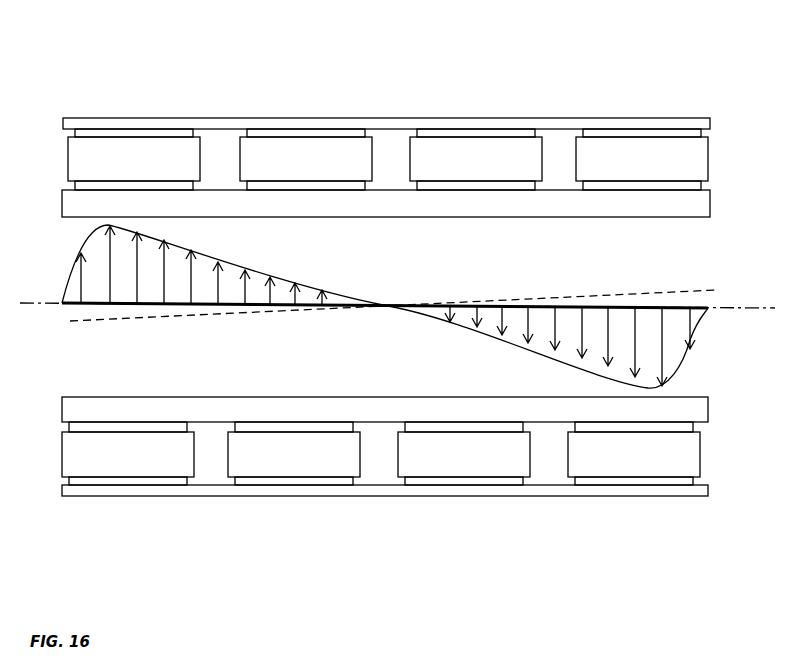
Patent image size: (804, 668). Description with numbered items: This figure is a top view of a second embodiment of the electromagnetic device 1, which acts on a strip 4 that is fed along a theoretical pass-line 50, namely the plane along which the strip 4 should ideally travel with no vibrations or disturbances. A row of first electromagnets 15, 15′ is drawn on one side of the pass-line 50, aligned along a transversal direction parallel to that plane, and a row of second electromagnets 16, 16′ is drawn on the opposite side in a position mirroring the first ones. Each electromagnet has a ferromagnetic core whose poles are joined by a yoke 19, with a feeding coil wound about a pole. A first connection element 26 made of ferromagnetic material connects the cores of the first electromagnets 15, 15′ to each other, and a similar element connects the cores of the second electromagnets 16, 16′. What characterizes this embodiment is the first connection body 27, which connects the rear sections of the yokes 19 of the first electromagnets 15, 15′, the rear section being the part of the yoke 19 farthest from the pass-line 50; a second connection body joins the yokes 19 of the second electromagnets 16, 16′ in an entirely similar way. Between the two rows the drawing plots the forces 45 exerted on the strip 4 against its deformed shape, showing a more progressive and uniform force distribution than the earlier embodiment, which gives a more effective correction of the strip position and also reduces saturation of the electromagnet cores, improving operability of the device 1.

The electromagnetic device 1 is at (613, 86).
The strip 4 is at (512, 302).
The first electromagnet 15 is at (645, 170).
The first electromagnet 15′ is at (474, 155).
The second electromagnet 16 is at (676, 455).
The second electromagnet 16′ is at (446, 465).
The yoke 19 is at (181, 132).
The first connection element 26 is at (388, 210).
The first connection body 27 is at (558, 125).
The forces 45 is at (78, 278).
The theoretical pass-line 50 is at (727, 308).